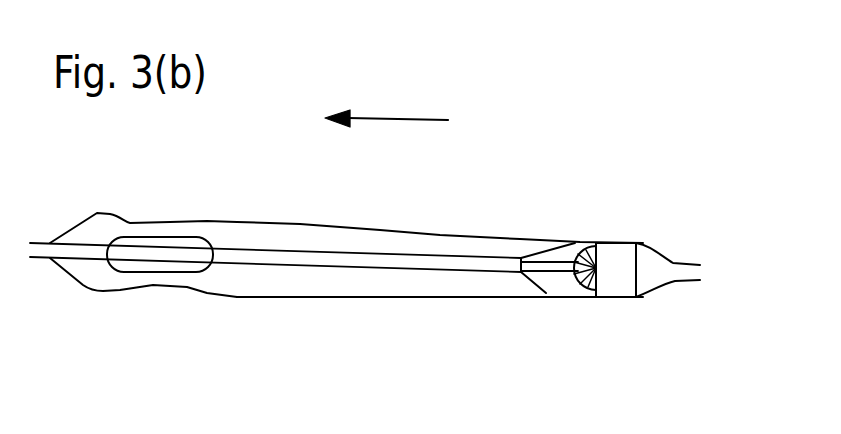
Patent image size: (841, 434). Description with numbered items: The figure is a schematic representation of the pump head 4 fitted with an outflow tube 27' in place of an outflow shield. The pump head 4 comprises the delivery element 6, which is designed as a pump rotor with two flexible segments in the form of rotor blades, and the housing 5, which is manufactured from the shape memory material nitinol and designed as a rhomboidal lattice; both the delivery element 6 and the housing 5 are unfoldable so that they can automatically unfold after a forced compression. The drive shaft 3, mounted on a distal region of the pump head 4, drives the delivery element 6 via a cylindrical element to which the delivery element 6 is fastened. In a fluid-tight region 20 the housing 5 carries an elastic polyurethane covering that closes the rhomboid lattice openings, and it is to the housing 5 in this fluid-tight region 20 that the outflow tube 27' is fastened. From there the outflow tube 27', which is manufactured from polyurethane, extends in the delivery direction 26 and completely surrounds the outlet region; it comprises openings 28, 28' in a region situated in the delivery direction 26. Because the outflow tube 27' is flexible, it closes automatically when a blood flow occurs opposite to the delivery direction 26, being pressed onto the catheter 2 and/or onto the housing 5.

The catheter 2 is at (473, 272).
The drive shaft 3 is at (550, 275).
The pump head 4 is at (680, 176).
The housing 5 is at (675, 255).
The delivery element 6 is at (577, 296).
The fluid-tight region 20 is at (613, 287).
The delivery direction 26 is at (400, 120).
The outflow tube 27' is at (440, 307).
The opening 28 is at (143, 195).
The opening 28' is at (177, 212).